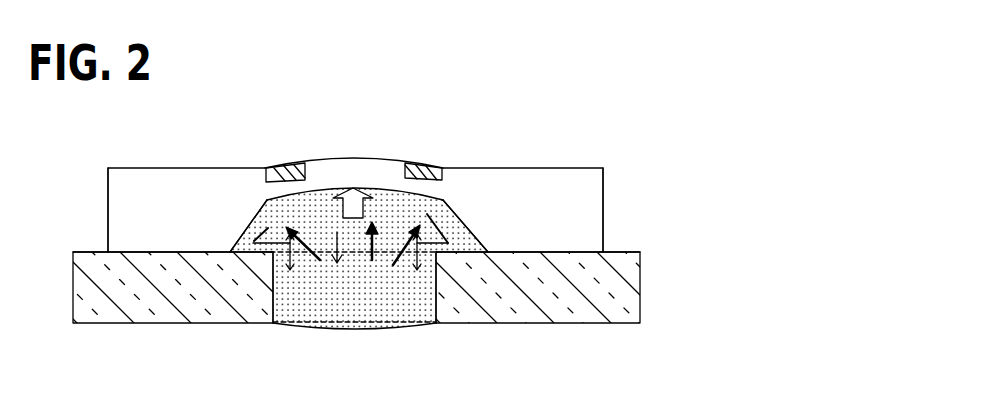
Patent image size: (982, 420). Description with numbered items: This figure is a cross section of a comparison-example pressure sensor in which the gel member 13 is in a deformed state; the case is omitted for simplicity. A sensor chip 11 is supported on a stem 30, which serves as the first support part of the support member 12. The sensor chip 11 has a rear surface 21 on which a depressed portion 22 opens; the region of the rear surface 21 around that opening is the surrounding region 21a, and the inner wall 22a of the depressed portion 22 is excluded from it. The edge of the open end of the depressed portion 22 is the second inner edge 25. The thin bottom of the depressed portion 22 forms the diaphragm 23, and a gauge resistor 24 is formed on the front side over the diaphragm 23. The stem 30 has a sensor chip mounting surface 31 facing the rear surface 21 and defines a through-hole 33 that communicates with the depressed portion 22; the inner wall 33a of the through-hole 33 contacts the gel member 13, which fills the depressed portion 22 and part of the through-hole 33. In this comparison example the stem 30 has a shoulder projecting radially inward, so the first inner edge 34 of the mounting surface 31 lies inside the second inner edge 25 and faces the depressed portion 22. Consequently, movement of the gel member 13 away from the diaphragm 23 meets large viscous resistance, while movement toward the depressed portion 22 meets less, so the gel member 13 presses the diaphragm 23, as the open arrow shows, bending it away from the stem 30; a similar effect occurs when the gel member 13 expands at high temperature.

The sensor chip 11 is at (603, 205).
The support member 12 is at (381, 287).
The gel member 13 is at (312, 323).
The rear surface 21 is at (161, 259).
The surrounding region 21a is at (531, 256).
The depressed portion 22 is at (385, 212).
The inner wall 22a is at (458, 225).
The diaphragm 23 is at (337, 175).
The gauge resistor 24 is at (430, 163).
The second inner edge 25 is at (268, 250).
The stem 30 is at (639, 291).
The sensor chip mounting surface 31 is at (578, 252).
The through-hole 33 is at (346, 298).
The inner wall 33a is at (436, 293).
The first inner edge 34 is at (280, 254).